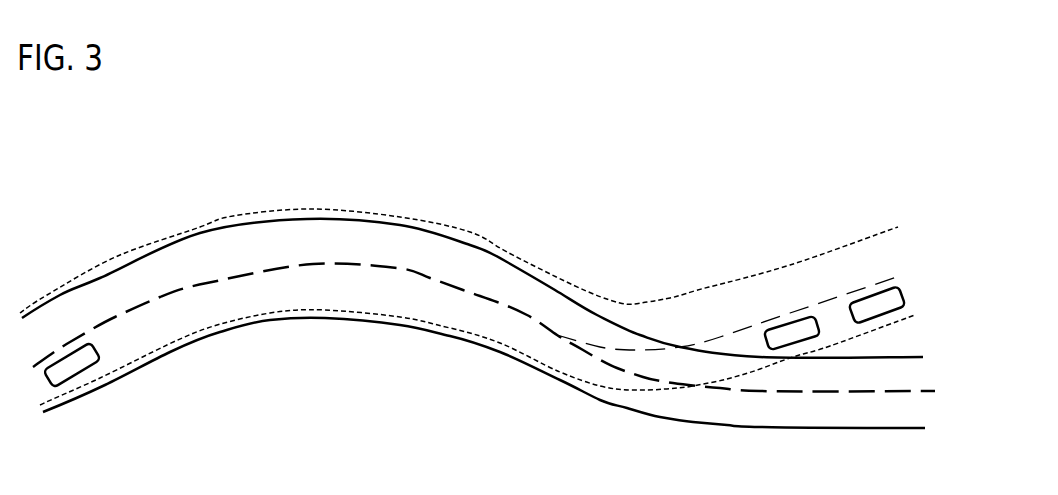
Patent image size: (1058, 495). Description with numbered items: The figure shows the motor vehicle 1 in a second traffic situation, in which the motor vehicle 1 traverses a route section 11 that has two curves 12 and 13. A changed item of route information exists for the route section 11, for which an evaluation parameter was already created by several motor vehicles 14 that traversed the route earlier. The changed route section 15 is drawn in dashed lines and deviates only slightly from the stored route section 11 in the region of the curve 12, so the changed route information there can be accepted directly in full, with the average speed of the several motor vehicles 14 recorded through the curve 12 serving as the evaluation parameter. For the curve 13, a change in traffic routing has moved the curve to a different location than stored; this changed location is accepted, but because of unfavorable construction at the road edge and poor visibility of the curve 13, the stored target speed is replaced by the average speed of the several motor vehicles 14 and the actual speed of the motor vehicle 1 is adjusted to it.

The motor vehicle 1 is at (85, 377).
The route section 11 is at (257, 222).
The curve 12 is at (466, 242).
The curve 13 is at (603, 317).
The motor vehicles 14 is at (787, 316).
The changed route section 15 is at (710, 278).